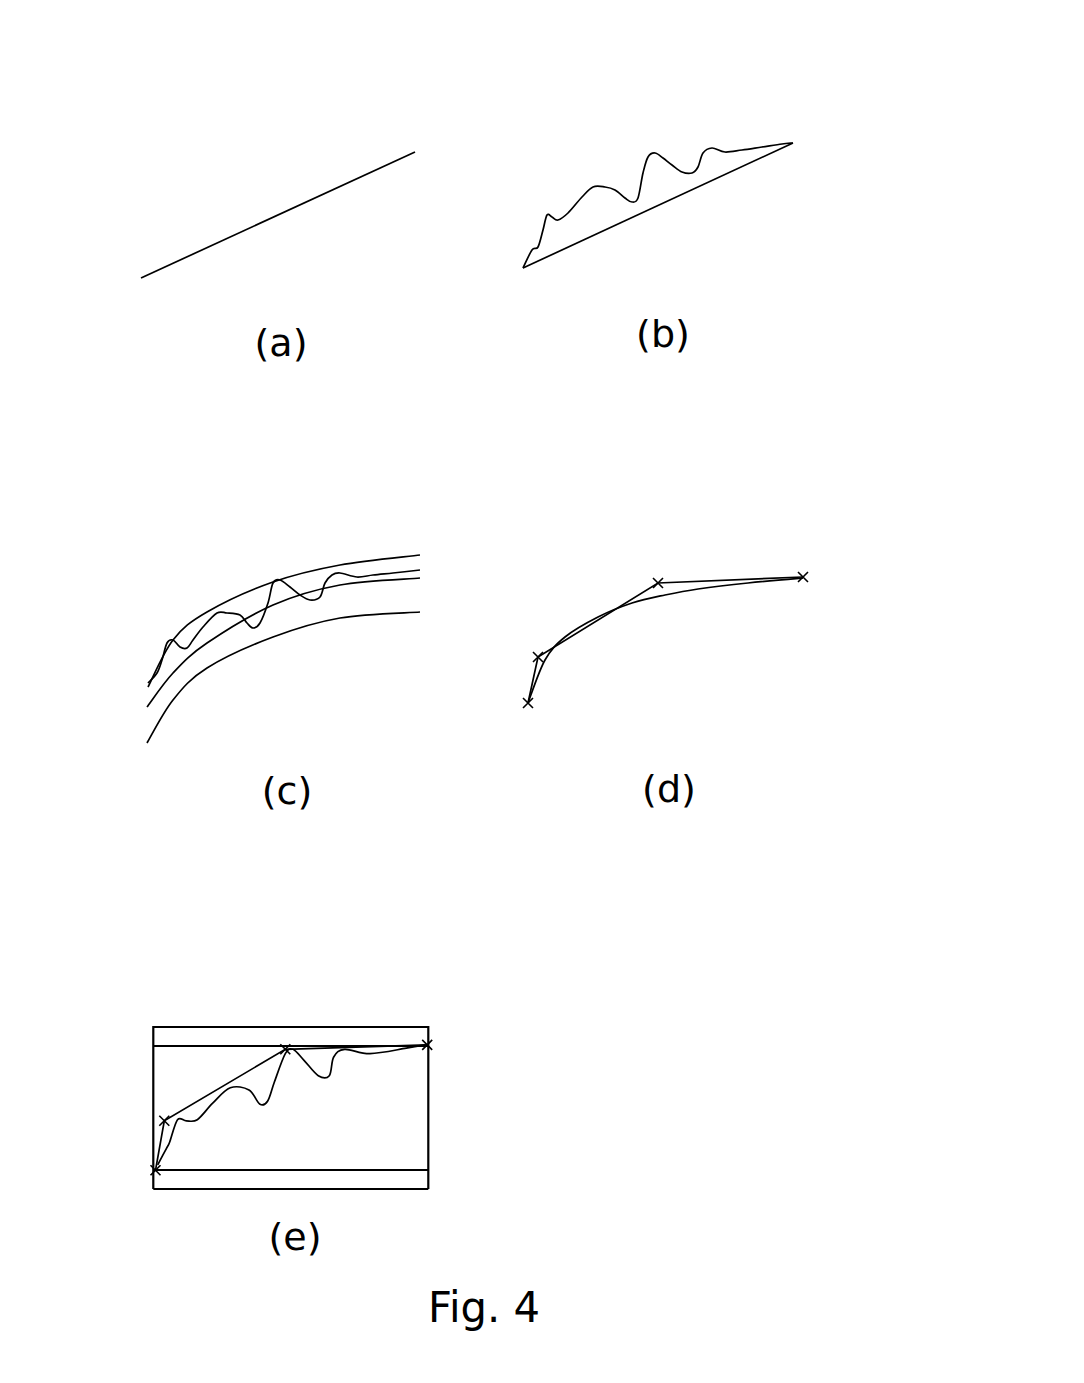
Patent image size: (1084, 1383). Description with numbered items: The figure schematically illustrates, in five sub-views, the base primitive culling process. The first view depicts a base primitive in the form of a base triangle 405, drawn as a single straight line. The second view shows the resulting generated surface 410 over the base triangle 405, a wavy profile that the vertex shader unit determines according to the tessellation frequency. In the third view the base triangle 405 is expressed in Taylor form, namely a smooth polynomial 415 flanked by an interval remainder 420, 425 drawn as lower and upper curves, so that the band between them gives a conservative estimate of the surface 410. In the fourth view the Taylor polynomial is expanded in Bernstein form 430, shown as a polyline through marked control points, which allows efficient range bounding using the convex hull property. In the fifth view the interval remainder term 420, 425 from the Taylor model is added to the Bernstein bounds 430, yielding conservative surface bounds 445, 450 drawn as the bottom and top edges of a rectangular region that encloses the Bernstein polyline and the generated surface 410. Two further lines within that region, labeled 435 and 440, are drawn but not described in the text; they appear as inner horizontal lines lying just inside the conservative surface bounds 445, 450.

The base triangle 405 is at (258, 222).
The generated surface 410 is at (653, 152).
The polynomial 415 is at (352, 587).
The interval remainder 420 is at (240, 648).
The interval remainder 425 is at (358, 557).
The Bernstein form 430 is at (717, 580).
The lower tolerance line 435 is at (185, 1170).
The upper tolerance line 440 is at (248, 1042).
The conservative surface bounds 445 is at (232, 1189).
The conservative surface bounds 450 is at (168, 1025).